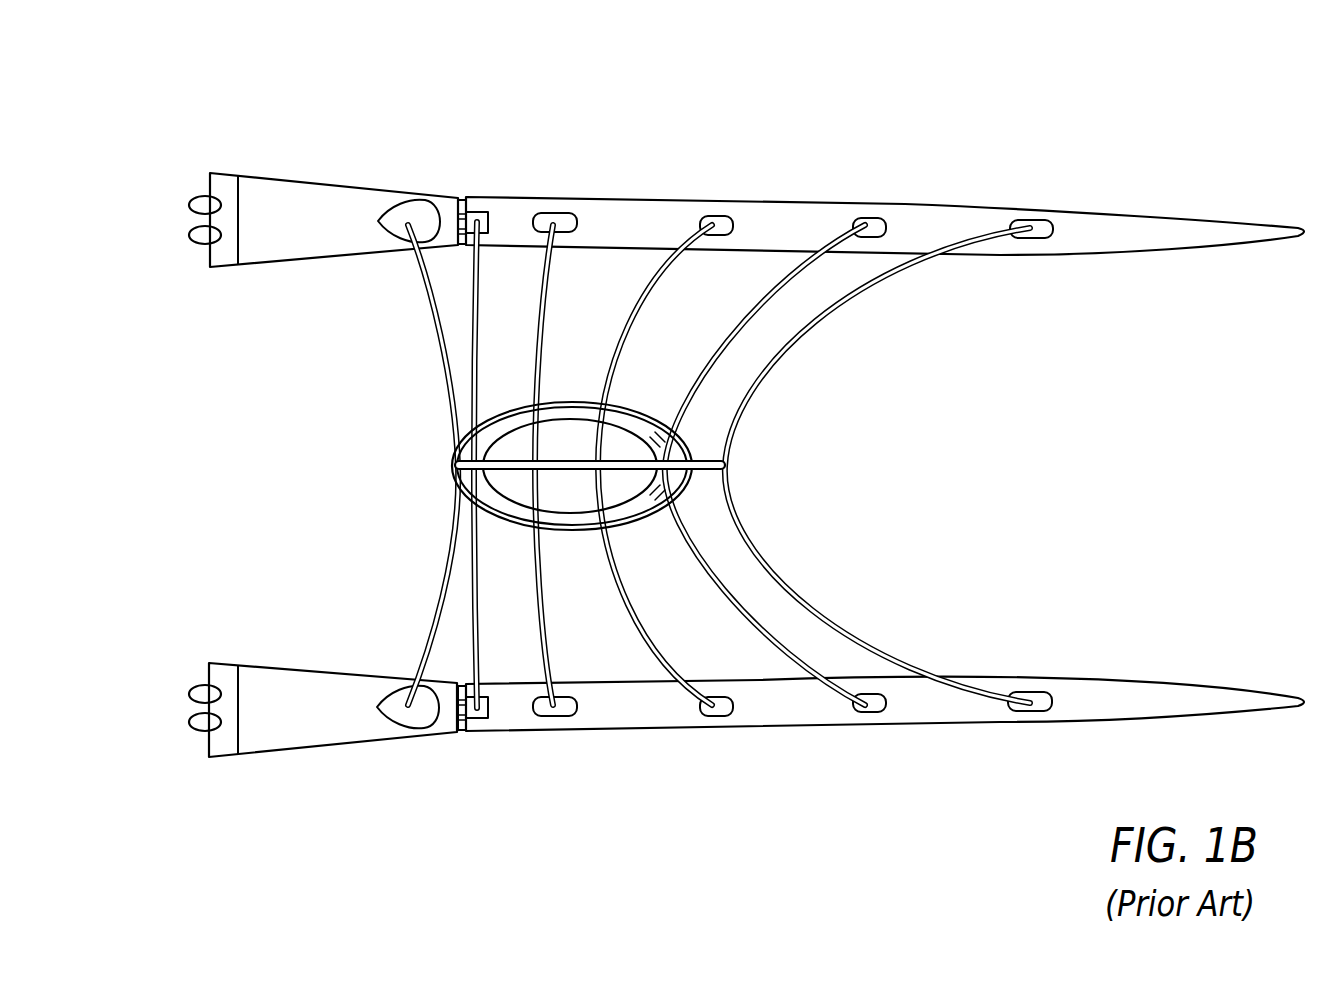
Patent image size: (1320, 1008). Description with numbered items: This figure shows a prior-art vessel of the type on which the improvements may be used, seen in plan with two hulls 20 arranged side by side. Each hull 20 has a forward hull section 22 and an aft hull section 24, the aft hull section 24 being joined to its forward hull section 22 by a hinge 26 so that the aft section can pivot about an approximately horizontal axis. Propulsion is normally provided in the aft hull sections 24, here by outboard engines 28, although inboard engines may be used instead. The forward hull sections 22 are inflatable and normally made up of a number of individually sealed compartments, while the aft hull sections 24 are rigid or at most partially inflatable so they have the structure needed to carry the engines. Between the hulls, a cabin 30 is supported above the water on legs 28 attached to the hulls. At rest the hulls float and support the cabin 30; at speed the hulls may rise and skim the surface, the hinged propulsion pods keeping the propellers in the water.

The hull 20 is at (818, 100).
The forward hull section 22 is at (913, 204).
The aft hull section 24 is at (332, 182).
The hinge 26 is at (458, 205).
The outboard engine / leg 28 is at (192, 205).
The cabin 30 is at (568, 405).